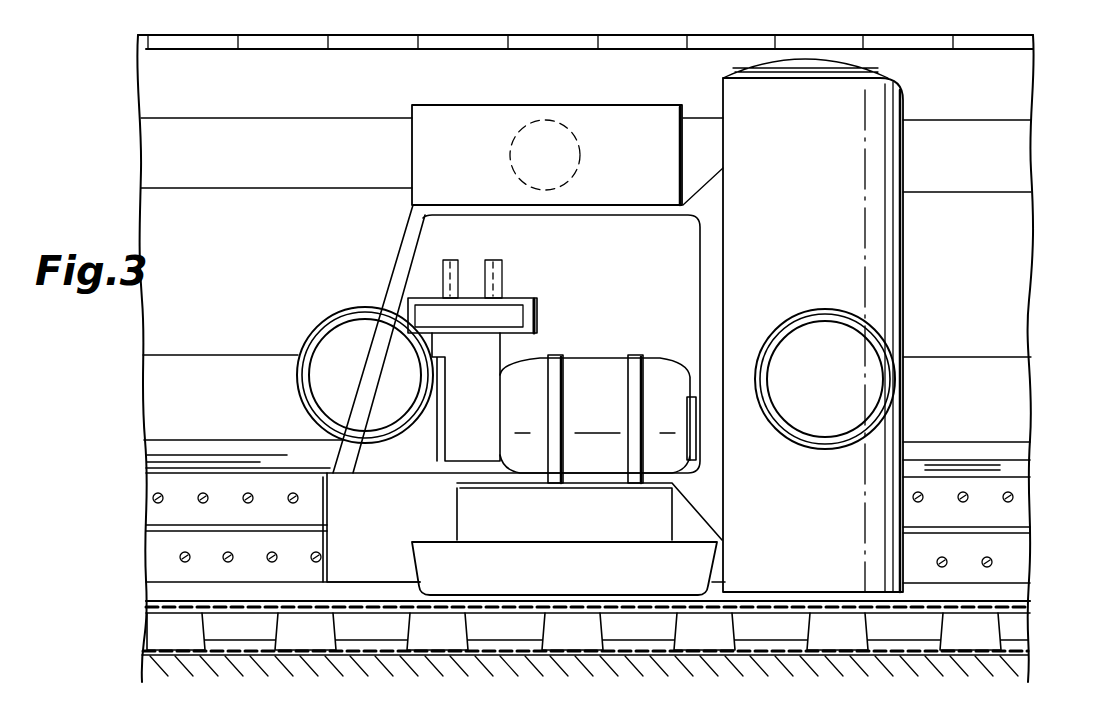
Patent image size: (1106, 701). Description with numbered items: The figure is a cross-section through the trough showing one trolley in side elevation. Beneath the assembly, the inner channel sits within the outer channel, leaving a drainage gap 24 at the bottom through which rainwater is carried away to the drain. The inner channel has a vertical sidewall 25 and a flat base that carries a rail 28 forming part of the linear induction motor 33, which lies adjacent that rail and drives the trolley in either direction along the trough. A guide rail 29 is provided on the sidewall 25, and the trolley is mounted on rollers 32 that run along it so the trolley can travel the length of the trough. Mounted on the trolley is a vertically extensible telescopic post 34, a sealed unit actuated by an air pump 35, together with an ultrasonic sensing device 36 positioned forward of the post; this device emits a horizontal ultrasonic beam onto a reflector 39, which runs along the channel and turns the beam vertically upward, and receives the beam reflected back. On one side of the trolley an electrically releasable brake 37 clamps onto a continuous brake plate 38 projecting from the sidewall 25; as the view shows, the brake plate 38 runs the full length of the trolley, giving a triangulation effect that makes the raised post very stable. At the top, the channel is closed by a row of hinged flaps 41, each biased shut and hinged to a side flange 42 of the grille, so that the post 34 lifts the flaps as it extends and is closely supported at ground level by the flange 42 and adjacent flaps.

The drainage gap 24 is at (168, 630).
The vertical sidewall 25 is at (226, 290).
The rail 28 is at (170, 600).
The guide rail 29 is at (209, 440).
The rollers 32 is at (328, 322).
The linear induction motor 33 is at (584, 580).
The vertically extensible telescopic post 34 is at (878, 288).
The air pump 35 is at (585, 378).
The ultrasonic sensing device 36 is at (652, 173).
The electrically releasable brake 37 is at (392, 531).
The continuous brake plate 38 is at (176, 526).
The reflector 39 is at (327, 168).
The hinged flaps 41 is at (760, 44).
The side flange 42 is at (1008, 96).